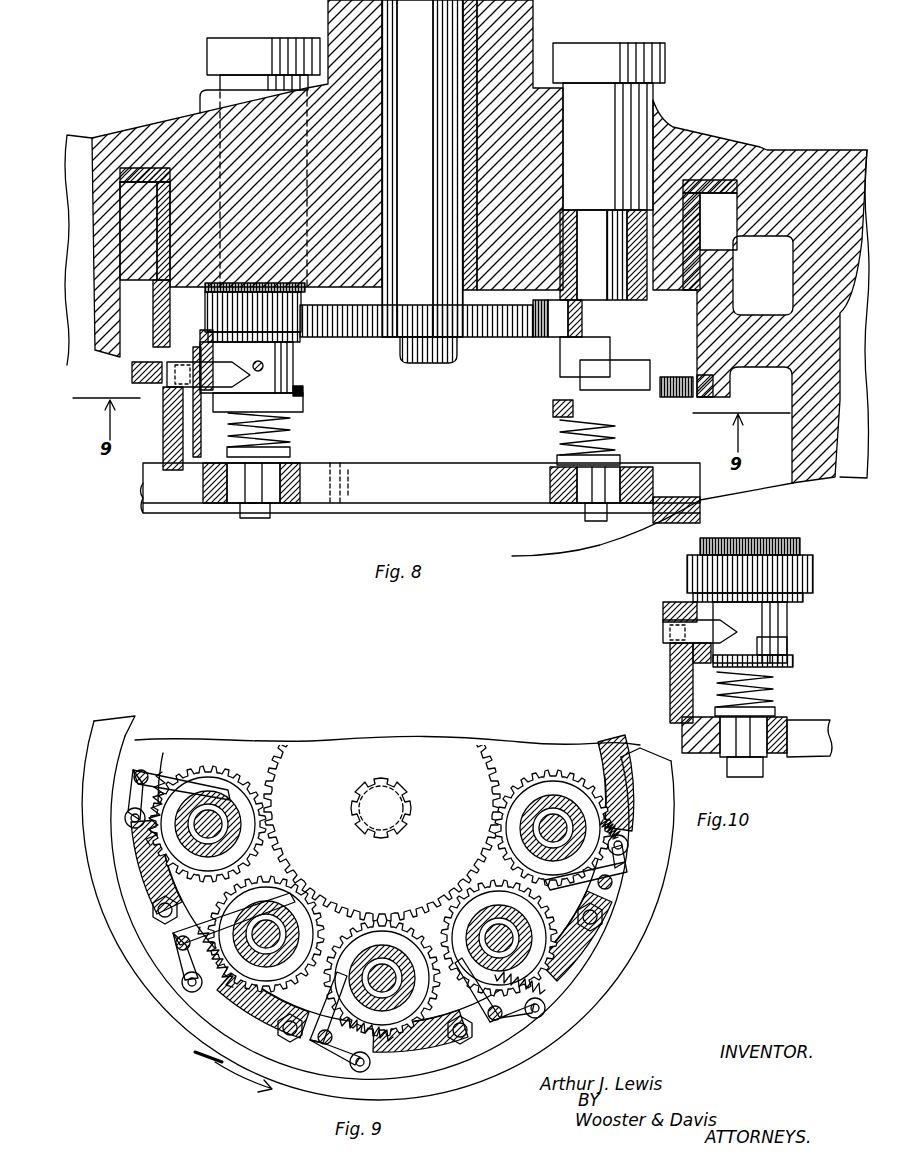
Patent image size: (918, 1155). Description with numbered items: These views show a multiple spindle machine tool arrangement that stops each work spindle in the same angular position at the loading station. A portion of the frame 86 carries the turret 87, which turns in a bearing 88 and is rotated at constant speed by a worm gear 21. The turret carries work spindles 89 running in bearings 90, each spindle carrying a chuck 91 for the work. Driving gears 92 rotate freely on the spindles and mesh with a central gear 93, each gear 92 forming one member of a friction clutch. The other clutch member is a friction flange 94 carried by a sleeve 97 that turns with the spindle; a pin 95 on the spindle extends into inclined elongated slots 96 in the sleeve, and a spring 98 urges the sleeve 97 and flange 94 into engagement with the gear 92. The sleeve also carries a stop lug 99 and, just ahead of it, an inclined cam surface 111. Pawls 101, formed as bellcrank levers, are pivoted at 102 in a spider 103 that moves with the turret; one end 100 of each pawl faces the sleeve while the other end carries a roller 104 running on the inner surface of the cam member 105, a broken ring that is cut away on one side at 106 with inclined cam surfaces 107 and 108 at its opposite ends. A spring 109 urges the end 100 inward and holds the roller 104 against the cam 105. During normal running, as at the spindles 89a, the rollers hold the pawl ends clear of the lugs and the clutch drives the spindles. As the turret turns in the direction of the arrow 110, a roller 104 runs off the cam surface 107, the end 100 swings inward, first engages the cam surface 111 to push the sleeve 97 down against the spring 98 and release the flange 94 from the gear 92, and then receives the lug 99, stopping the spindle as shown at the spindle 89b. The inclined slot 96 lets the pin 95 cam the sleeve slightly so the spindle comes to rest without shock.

In FIG. 8, the worm gear 21 is at (165, 515).
In FIG. 8, the frame 86 is at (812, 160).
In FIG. 8, the turret 87 is at (680, 140).
In FIG. 8, the bearing 88 is at (712, 185).
In FIG. 8, the work spindle 89 is at (603, 255).
In FIG. 9, the spindle 89a is at (222, 815).
In FIG. 9, the spindle 89b is at (383, 968).
In FIG. 8, the bearing 90 is at (517, 168).
In FIG. 8, the chuck 91 is at (250, 48).
In FIG. 8, the driving gear 92 is at (305, 300).
In FIG. 10, the driving gear 92 is at (812, 580).
In FIG. 9, the driving gear 92 is at (535, 768).
In FIG. 8, the central gear 93 is at (372, 335).
In FIG. 9, the central gear 93 is at (482, 742).
In FIG. 8, the friction flange 94 is at (312, 303).
In FIG. 10, the friction flange 94 is at (805, 610).
In FIG. 8, the pin 95 is at (300, 372).
In FIG. 8, the inclined elongated slot 96 is at (300, 353).
In FIG. 8, the sleeve 97 is at (300, 350).
In FIG. 10, the sleeve 97 is at (790, 625).
In FIG. 9, the sleeve 97 is at (250, 822).
In FIG. 8, the spring 98 is at (290, 440).
In FIG. 10, the spring 98 is at (776, 700).
In FIG. 8, the stop lug 99 is at (305, 402).
In FIG. 10, the stop lug 99 is at (790, 647).
In FIG. 9, the stop lug 99 is at (148, 880).
In FIG. 8, the end of pawl 100 is at (225, 372).
In FIG. 10, the end of pawl 100 is at (720, 643).
In FIG. 9, the end of pawl 100 is at (205, 765).
In FIG. 9, the pawl 101 is at (188, 745).
In FIG. 8, the pivot 102 is at (175, 400).
In FIG. 10, the pivot 102 is at (680, 660).
In FIG. 9, the pivot 102 is at (135, 780).
In FIG. 8, the spider 103 is at (165, 455).
In FIG. 8, the roller 104 is at (160, 385).
In FIG. 9, the roller 104 is at (190, 993).
In FIG. 8, the cam member 105 is at (705, 398).
In FIG. 9, the cam member 105 is at (150, 905).
In FIG. 9, the cut away portion 106 is at (460, 1060).
In FIG. 9, the inclined cam surface 107 is at (165, 978).
In FIG. 9, the inclined cam surface 108 is at (580, 987).
In FIG. 9, the spring 109 is at (185, 800).
In FIG. 9, the arrow 110 is at (232, 1082).
In FIG. 8, the inclined cam surface 111 is at (300, 398).
In FIG. 10, the inclined cam surface 111 is at (700, 662).